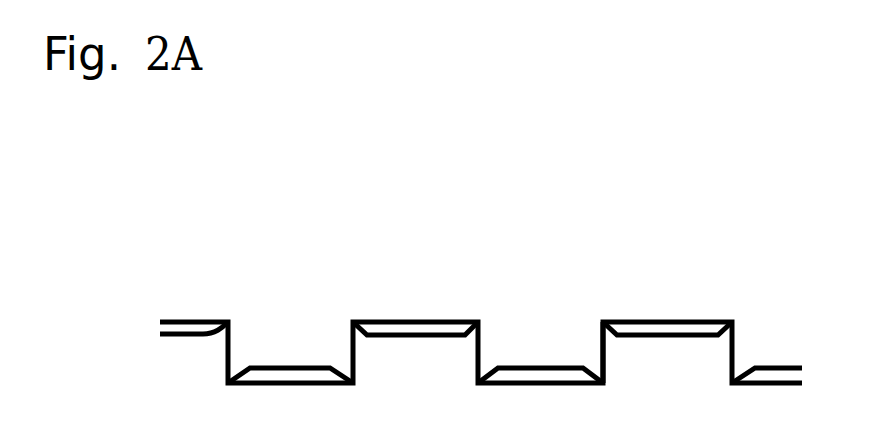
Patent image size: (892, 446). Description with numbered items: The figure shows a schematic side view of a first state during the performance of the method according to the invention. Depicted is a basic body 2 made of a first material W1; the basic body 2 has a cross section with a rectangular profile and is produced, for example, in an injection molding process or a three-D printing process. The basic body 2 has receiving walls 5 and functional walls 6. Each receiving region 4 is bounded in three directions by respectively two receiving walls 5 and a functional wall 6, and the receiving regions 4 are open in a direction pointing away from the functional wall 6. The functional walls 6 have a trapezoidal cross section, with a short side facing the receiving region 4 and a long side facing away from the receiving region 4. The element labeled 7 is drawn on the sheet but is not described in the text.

The basic body 2 is at (286, 236).
The first material W1 is at (233, 321).
The receiving region 4 is at (533, 332).
The receiving wall 5 is at (599, 326).
The functional wall 6 is at (413, 314).
The crest top portion 7 is at (665, 328).